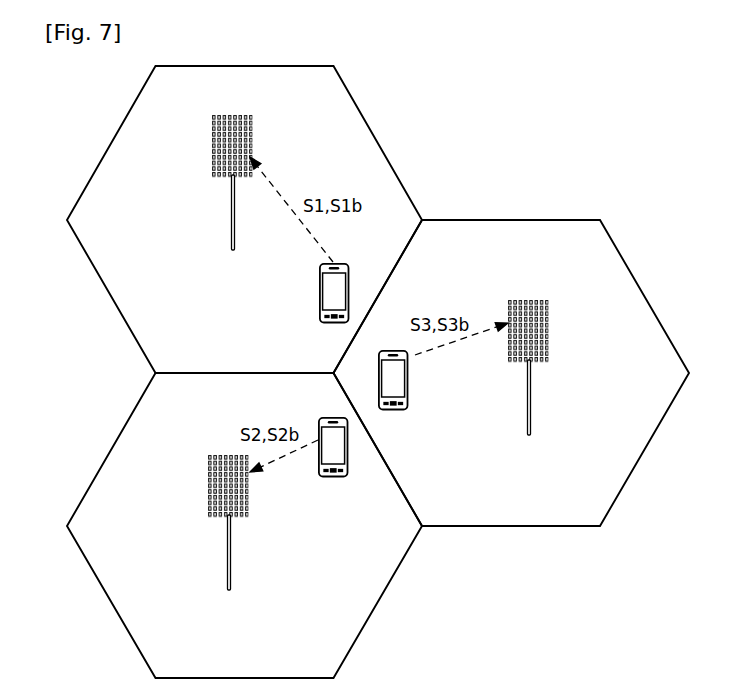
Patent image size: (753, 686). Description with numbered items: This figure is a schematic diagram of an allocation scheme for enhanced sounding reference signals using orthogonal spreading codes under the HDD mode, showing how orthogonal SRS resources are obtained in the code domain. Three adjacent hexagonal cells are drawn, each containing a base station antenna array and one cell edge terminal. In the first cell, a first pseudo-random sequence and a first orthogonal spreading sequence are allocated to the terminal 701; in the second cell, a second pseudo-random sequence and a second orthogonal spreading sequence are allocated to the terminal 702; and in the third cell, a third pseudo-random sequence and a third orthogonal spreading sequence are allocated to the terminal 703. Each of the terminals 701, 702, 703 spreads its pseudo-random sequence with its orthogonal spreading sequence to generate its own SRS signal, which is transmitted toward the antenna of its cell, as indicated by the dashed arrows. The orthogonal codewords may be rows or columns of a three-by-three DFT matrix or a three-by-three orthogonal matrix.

The terminal 701 is at (319, 294).
The terminal 702 is at (333, 477).
The terminal 703 is at (409, 378).